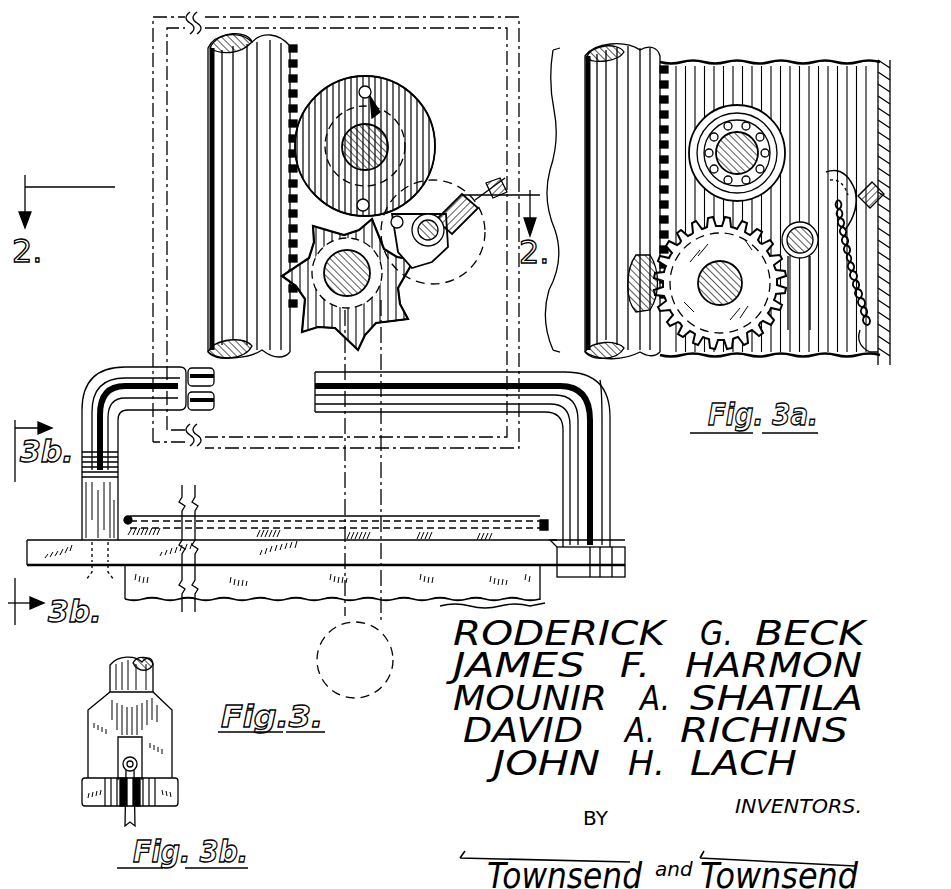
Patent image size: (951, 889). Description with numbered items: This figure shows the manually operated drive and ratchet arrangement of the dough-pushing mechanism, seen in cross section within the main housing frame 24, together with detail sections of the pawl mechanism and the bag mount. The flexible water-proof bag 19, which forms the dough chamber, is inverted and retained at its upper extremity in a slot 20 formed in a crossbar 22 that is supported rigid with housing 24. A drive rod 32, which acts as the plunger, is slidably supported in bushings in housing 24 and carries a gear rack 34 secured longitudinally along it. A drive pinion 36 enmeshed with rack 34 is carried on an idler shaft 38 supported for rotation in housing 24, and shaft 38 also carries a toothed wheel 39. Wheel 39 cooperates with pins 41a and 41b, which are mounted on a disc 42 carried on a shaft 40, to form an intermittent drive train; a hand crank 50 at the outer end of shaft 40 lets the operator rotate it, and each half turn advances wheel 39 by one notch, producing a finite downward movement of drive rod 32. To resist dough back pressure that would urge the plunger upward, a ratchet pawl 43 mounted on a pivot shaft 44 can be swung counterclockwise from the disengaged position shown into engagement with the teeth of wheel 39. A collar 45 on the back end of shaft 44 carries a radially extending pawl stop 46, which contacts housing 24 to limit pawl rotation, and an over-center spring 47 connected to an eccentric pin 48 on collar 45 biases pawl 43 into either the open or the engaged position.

In FIG. 3, the flexible water-proof bag 19 is at (258, 600).
In FIG. 3B, the flexible water-proof bag 19 is at (125, 815).
In FIG. 3B, the slot 20 is at (115, 780).
In FIG. 3, the crossbar 22 is at (63, 546).
In FIG. 3B, the crossbar 22 is at (171, 790).
In FIG. 3, the main housing frame 24 is at (352, 230).
In FIG. 3A, the main housing frame 24 is at (760, 72).
In FIG. 3, the drive rod 32 is at (216, 64).
In FIG. 3A, the drive rod 32 is at (590, 124).
In FIG. 3, the gear rack 34 is at (293, 344).
In FIG. 3A, the gear rack 34 is at (664, 344).
In FIG. 3A, the drive pinion 36 is at (728, 349).
In FIG. 3, the idler shaft 38 is at (330, 292).
In FIG. 3A, the idler shaft 38 is at (720, 298).
In FIG. 3, the toothed wheel 39 is at (402, 306).
In FIG. 3, the shaft 40 is at (388, 134).
In FIG. 3A, the shaft 40 is at (754, 136).
In FIG. 3, the pin 41a is at (357, 203).
In FIG. 3, the pin 41b is at (368, 88).
In FIG. 3, the disc 42 is at (412, 118).
In FIG. 3, the ratchet pawl 43 is at (462, 215).
In FIG. 3, the pivot shaft 44 is at (431, 246).
In FIG. 3A, the pivot shaft 44 is at (800, 277).
In FIG. 3A, the collar 45 is at (849, 285).
In FIG. 3, the pawl stop 46 is at (495, 186).
In FIG. 3A, the pawl stop 46 is at (866, 210).
In FIG. 3A, the over-center spring 47 is at (866, 327).
In FIG. 3A, the eccentric pin 48 is at (836, 192).
In FIG. 3, the hand crank 50 is at (383, 633).